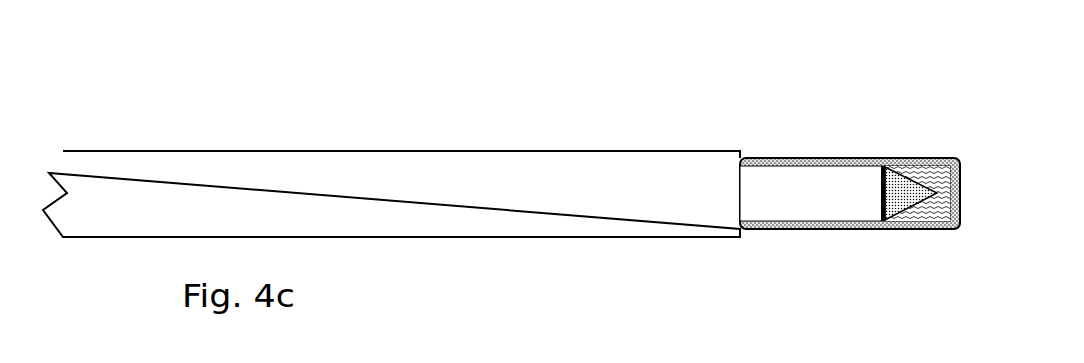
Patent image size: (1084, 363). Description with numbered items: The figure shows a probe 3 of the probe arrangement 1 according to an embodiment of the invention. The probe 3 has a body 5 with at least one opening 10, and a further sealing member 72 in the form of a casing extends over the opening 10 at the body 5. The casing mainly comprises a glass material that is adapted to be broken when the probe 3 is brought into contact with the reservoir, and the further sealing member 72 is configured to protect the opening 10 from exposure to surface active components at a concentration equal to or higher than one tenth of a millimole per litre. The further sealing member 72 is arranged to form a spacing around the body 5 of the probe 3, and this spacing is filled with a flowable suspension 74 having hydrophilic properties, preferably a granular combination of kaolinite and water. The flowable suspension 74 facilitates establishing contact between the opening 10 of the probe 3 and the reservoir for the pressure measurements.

The probe arrangement 1 is at (562, 56).
The probe 3 is at (237, 160).
The body 5 is at (902, 183).
The opening 10 is at (898, 206).
The further sealing member 72 is at (775, 160).
The flowable suspension 74 is at (932, 172).